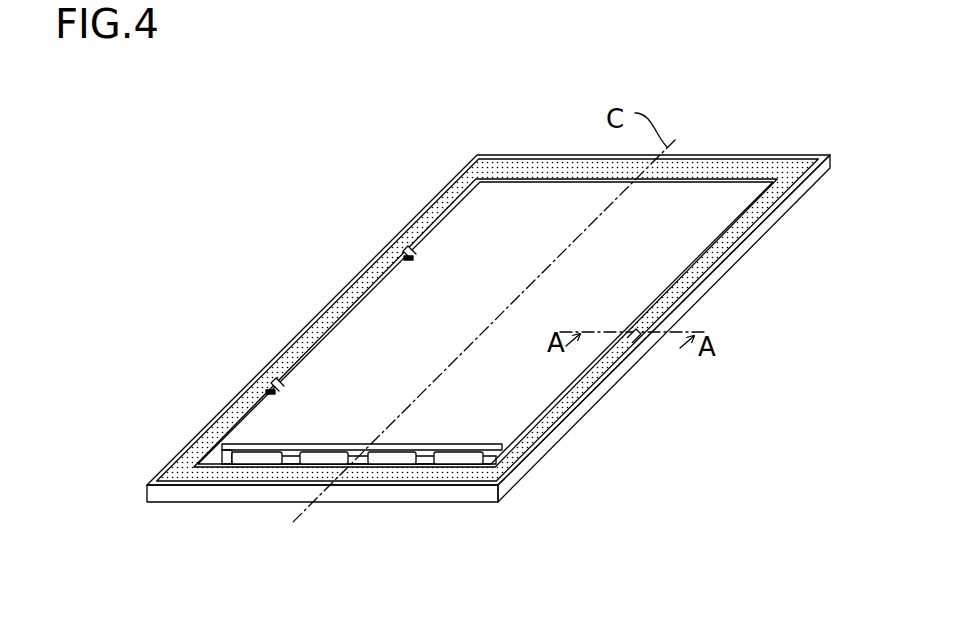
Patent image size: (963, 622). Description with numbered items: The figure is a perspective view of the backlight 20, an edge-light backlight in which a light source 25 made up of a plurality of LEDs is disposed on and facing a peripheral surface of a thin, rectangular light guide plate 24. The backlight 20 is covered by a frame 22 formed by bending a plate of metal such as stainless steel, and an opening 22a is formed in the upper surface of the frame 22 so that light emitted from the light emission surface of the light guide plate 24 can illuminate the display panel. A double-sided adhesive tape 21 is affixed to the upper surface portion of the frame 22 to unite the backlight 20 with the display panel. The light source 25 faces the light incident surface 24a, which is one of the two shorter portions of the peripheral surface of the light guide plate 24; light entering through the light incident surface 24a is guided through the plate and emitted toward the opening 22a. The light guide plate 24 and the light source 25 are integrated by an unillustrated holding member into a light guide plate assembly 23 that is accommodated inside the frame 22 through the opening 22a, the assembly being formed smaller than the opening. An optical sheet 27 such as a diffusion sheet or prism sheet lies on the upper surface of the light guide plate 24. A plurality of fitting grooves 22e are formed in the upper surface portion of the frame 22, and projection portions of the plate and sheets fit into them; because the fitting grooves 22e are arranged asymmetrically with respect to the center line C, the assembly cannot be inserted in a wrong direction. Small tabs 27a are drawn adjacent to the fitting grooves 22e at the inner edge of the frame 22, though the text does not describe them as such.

The backlight 20 is at (748, 122).
The double-sided adhesive tape 21 is at (202, 440).
The frame 22 is at (785, 228).
The opening 22a is at (223, 465).
The fitting grooves 22e is at (405, 248).
The light guide plate assembly 23 is at (364, 532).
The light guide plate 24 is at (427, 465).
The light incident surface 24a is at (520, 463).
The light source 25 is at (455, 465).
The optical sheet 27 is at (528, 405).
The projection 27a is at (416, 257).